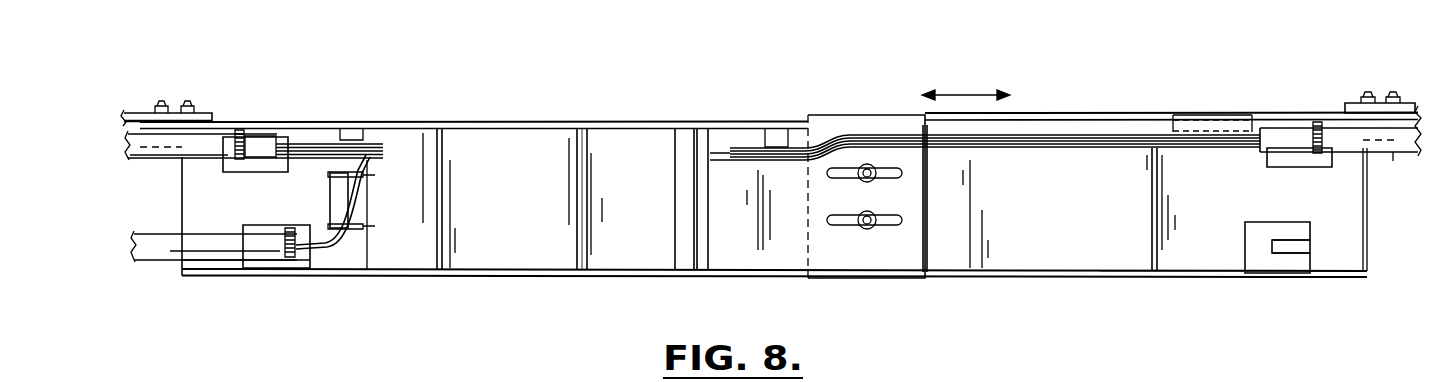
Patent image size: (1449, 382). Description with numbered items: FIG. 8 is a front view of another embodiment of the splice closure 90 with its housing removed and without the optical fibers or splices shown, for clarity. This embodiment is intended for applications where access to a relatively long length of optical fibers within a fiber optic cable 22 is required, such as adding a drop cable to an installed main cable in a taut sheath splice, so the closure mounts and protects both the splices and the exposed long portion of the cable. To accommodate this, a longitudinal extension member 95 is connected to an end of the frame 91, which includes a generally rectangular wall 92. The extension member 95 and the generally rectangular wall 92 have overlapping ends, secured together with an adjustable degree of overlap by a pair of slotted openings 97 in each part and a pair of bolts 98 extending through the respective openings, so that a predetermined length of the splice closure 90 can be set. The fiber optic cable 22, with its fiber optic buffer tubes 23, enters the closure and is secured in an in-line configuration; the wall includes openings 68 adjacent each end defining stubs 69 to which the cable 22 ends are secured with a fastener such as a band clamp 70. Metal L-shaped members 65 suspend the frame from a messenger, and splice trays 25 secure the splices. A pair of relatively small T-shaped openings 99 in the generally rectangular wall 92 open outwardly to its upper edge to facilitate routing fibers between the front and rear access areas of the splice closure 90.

The splice closure 90 is at (482, 74).
The L-shaped member 65 is at (205, 120).
The fiber optic cable 22 is at (213, 147).
The fiber optic buffer tube 23 is at (304, 151).
The T-shaped opening 99 is at (348, 136).
The splice tray 25 is at (563, 142).
The frame 91 is at (346, 280).
The generally rectangular wall 92 is at (785, 252).
The slotted opening 97 is at (905, 180).
The bolt 98 is at (872, 211).
The band clamp 70 is at (1316, 126).
The longitudinal extension member 95 is at (1097, 287).
The opening 68 is at (1258, 260).
The stub 69 is at (1303, 244).